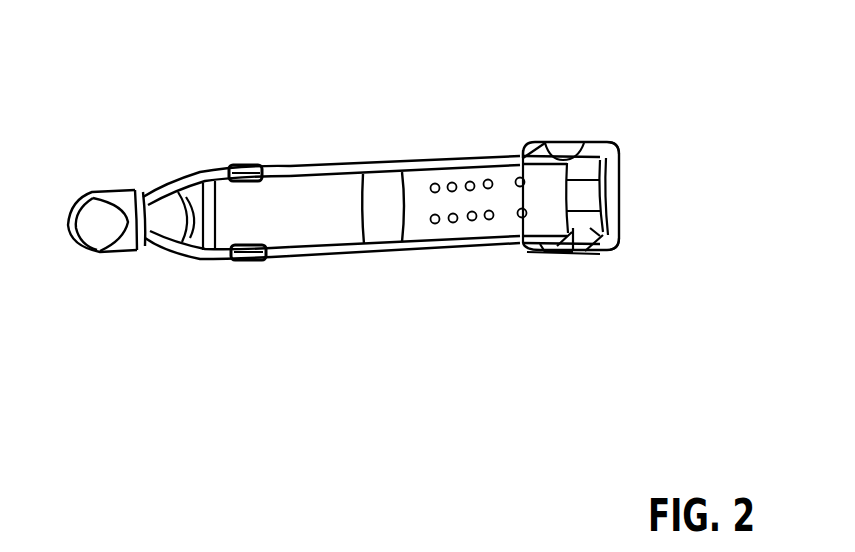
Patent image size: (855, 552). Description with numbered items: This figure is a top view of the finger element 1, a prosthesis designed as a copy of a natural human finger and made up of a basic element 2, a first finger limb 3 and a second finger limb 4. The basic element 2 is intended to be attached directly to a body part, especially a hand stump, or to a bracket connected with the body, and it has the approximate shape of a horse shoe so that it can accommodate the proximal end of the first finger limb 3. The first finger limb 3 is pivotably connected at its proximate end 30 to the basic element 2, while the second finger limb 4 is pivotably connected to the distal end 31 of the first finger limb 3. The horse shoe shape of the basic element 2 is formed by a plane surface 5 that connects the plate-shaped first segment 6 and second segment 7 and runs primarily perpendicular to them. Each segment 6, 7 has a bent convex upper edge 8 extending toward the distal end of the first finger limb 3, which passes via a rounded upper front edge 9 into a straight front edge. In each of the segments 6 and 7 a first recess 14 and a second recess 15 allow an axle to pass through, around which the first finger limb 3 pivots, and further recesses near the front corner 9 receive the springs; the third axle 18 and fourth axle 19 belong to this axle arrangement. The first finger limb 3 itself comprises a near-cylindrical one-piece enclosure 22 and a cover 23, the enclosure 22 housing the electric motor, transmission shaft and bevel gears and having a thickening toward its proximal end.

The finger element 1 is at (304, 163).
The basic element 2 is at (620, 188).
The first finger limb 3 is at (413, 162).
The second finger limb 4 is at (172, 258).
The plane surface 5 is at (621, 217).
The first segment 6 is at (545, 253).
The second segment 7 is at (546, 141).
The upper edge 8 is at (598, 139).
The upper front edge 9 is at (521, 140).
The first recess 14 is at (582, 253).
The second recess 15 is at (581, 141).
The third axle 18 is at (537, 253).
The fourth axle 19 is at (538, 140).
The enclosure 22 is at (345, 253).
The cover 23 is at (204, 200).
The proximate end 30 is at (618, 229).
The distal end 31 is at (222, 248).